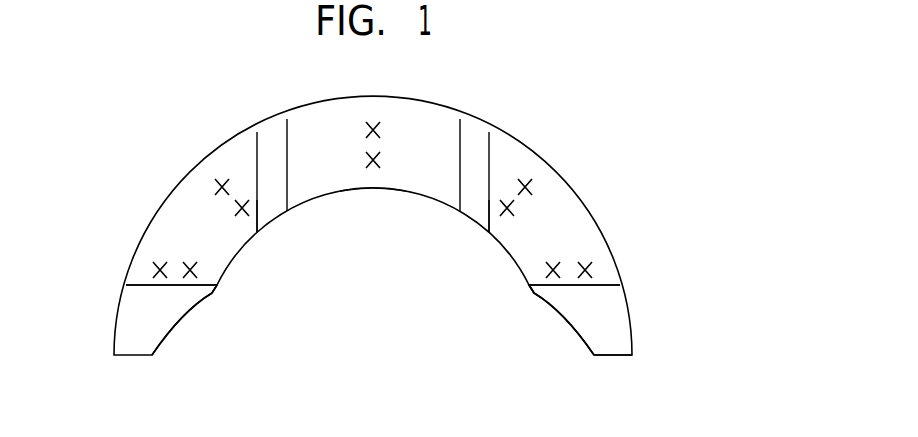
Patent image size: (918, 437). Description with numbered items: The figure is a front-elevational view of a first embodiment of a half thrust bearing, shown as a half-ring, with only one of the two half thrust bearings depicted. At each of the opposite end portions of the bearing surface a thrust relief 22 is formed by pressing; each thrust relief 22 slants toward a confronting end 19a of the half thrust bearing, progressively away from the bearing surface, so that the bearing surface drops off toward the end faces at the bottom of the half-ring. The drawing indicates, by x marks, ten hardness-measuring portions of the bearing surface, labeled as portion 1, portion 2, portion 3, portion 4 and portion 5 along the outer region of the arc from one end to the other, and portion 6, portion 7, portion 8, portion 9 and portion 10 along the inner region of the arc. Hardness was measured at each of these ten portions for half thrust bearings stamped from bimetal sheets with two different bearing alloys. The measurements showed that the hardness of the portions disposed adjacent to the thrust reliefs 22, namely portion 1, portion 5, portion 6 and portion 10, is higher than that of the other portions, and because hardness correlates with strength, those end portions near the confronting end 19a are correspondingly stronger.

The hardness-measuring portion # 1 is at (144, 273).
The hardness-measuring portion # 2 is at (214, 177).
The hardness-measuring portion # 3 is at (374, 123).
The hardness-measuring portion # 4 is at (533, 176).
The hardness-measuring portion # 5 is at (599, 271).
The hardness-measuring portion # 6 is at (236, 278).
The hardness-measuring portion # 7 is at (271, 231).
The hardness-measuring portion # 8 is at (373, 205).
The hardness-measuring portion # 9 is at (476, 231).
The hardness-measuring portion # 10 is at (502, 276).
The thrust relief 22 is at (128, 320).
The confronting end 19a is at (613, 355).